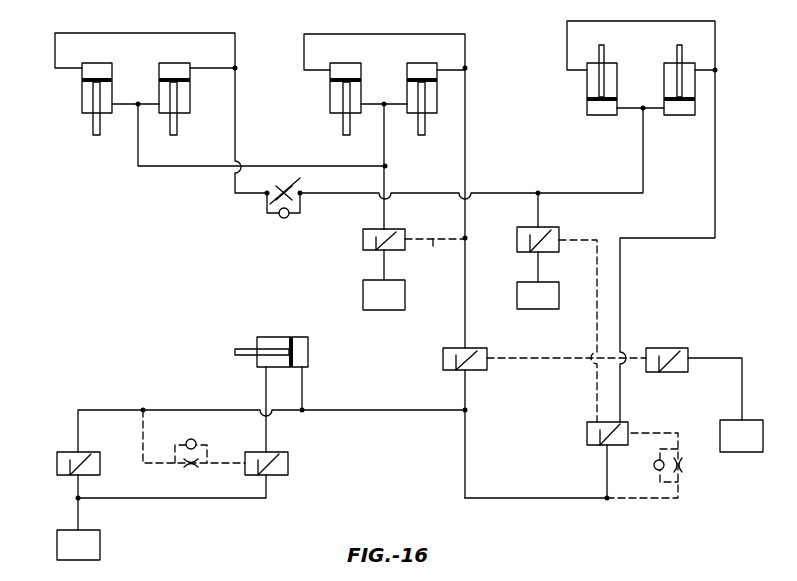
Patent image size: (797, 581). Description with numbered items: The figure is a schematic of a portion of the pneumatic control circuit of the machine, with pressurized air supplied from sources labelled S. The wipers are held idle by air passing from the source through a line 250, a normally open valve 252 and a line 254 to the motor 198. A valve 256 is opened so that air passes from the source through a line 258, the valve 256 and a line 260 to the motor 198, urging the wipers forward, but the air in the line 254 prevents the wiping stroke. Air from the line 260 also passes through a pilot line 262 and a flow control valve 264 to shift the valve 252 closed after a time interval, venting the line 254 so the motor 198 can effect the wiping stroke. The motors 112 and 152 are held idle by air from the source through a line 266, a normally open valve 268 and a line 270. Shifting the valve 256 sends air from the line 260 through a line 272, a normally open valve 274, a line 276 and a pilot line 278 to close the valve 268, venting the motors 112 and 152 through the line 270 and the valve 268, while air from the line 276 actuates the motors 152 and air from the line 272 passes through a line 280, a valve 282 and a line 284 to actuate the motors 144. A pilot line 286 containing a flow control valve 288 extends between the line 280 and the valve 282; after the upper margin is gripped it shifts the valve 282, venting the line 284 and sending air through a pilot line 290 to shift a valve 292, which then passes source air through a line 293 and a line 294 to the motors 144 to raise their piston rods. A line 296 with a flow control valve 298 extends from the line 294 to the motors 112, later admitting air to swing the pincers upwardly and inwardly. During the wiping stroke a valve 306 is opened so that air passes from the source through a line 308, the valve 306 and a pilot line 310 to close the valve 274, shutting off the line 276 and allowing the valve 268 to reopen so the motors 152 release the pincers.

The motors 112 is at (164, 70).
The motors 152 is at (407, 70).
The motors 144 is at (675, 72).
The motor 198 is at (275, 340).
The line 296 is at (236, 112).
The flow control valve 298 is at (286, 190).
The line 270 is at (385, 186).
The line 276 is at (466, 126).
The normally open valve 268 is at (392, 229).
The pilot line 278 is at (435, 252).
The line 266 is at (384, 272).
The line 294 is at (643, 175).
The line 284 is at (716, 178).
The valve 292 is at (550, 229).
The line 293 is at (540, 258).
The pilot line 290 is at (597, 335).
The valve 306 is at (672, 350).
The line 308 is at (743, 384).
The normally open valve 274 is at (450, 350).
The pilot line 310 is at (515, 358).
The line 272 is at (427, 409).
The line 280 is at (510, 498).
The valve 282 is at (590, 428).
The pilot line 286 is at (650, 433).
The flow control valve 288 is at (684, 466).
The line 254 is at (266, 395).
The line 260 is at (302, 396).
The pilot line 262 is at (143, 448).
The flow control valve 264 is at (195, 469).
The valve 256 is at (58, 458).
The line 258 is at (78, 488).
The normally open valve 252 is at (290, 465).
The line 250 is at (178, 498).